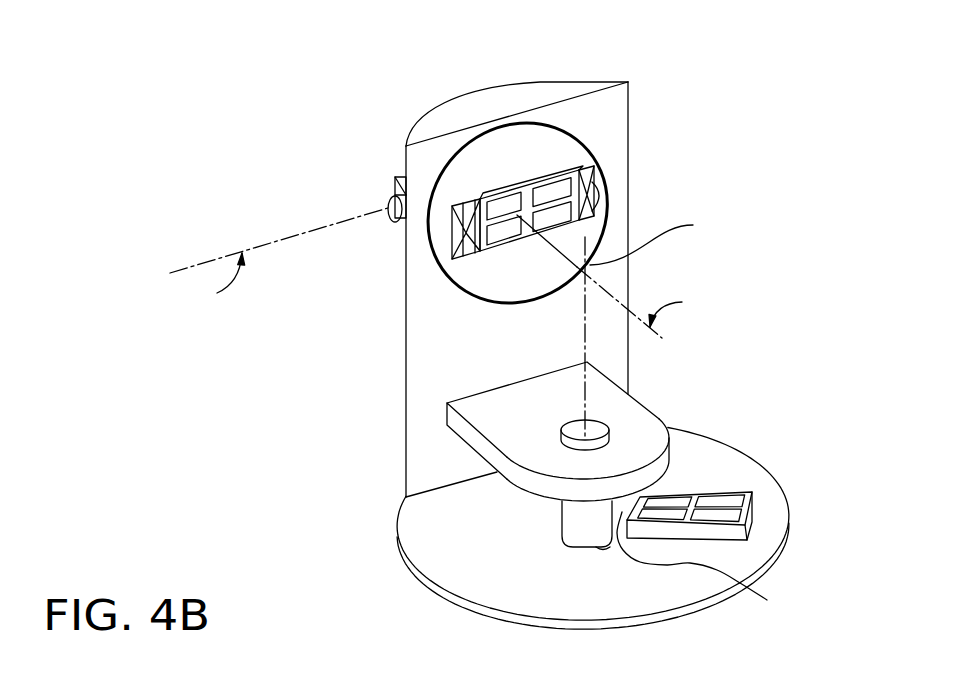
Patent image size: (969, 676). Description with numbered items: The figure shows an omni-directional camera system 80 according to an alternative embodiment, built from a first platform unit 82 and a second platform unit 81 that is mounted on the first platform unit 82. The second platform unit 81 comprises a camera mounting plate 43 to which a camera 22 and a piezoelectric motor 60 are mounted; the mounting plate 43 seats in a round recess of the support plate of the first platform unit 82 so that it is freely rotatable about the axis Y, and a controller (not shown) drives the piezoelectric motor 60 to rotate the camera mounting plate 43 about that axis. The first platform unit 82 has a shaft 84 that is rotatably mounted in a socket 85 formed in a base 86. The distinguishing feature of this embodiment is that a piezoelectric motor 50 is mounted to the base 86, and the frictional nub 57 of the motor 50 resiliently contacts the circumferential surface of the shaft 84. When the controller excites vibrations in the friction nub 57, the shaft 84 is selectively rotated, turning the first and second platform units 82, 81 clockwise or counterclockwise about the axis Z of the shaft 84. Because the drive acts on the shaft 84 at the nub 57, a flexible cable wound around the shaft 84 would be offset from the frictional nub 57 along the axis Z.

The omni-directional camera system 80 is at (352, 103).
The second platform unit 81 is at (628, 75).
The camera 22 is at (402, 175).
The camera mounting plate 43 is at (572, 157).
The piezoelectric motor 60 is at (467, 255).
The first platform unit 82 is at (472, 438).
The shaft 84 is at (576, 438).
The socket 85 is at (572, 548).
The base 86 is at (781, 536).
The piezoelectric motor 50 is at (716, 488).
The frictional nub 57 is at (708, 566).